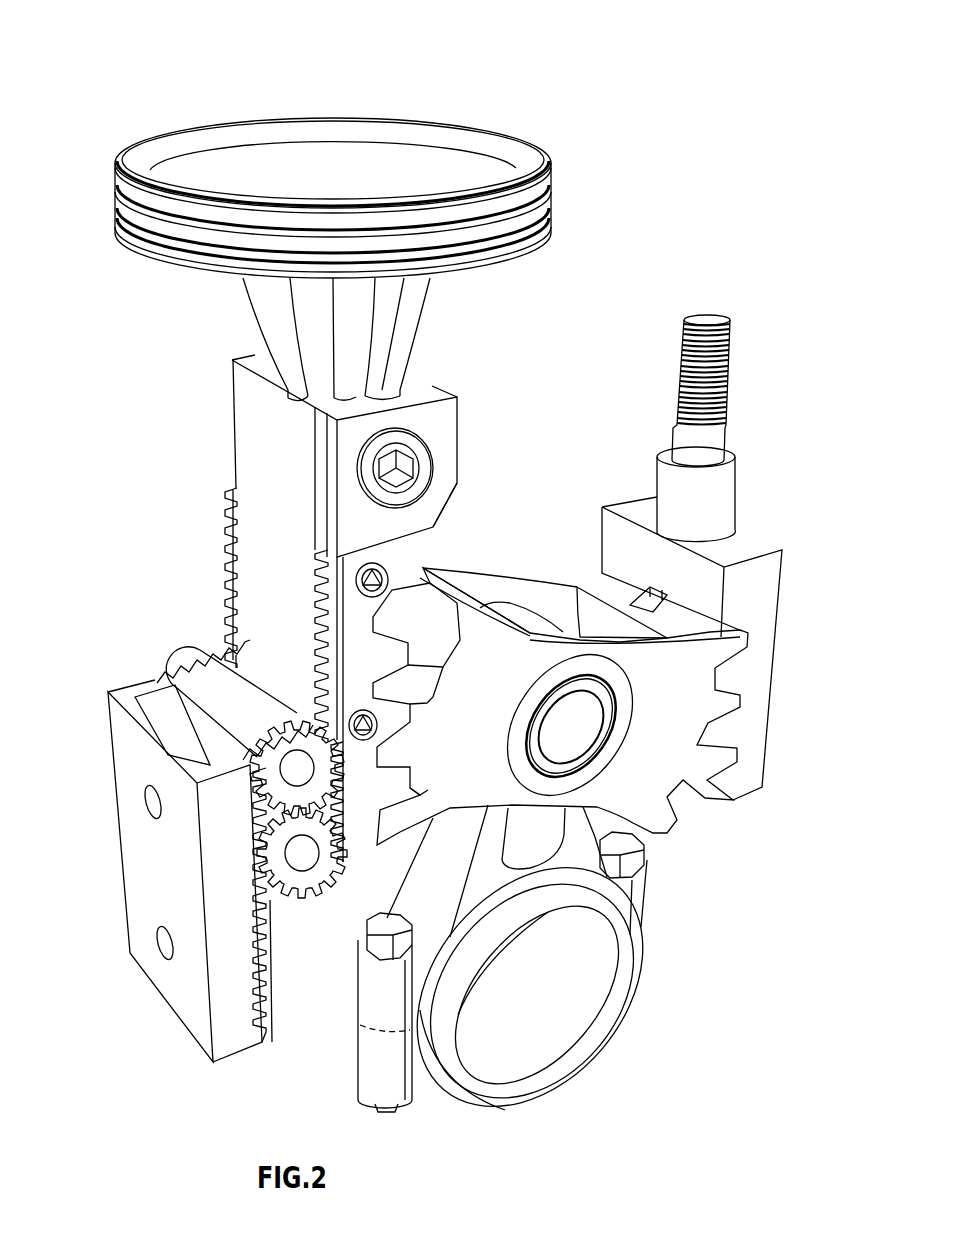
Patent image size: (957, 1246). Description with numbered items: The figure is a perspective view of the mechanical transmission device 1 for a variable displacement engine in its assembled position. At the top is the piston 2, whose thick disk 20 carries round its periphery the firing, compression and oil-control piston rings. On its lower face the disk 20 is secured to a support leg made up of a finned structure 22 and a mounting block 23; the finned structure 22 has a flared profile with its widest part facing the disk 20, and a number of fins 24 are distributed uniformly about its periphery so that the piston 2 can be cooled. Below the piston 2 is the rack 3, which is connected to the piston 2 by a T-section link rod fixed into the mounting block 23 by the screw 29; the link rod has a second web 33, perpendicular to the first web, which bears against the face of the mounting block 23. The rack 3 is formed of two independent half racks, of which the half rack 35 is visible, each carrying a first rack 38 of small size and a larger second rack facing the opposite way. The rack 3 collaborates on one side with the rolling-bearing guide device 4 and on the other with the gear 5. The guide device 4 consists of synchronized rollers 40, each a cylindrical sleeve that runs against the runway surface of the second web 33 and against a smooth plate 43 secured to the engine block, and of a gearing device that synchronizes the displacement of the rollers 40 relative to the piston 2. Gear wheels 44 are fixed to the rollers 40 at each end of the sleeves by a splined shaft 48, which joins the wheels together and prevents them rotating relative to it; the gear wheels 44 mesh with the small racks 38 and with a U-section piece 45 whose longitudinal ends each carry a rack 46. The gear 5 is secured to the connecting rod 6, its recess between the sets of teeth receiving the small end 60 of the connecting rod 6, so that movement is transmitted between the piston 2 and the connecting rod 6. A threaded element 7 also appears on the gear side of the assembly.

The mechanical transmission device 1 is at (712, 102).
The piston 2 is at (143, 108).
The rack 3 is at (200, 534).
The rolling-bearing guide device 4 is at (136, 616).
The gear 5 is at (572, 505).
The connecting rod 6 is at (642, 1036).
The threaded shaft 7 is at (750, 420).
The thick disk 20 is at (307, 163).
The finned structure 22 is at (226, 312).
The mounting block 23 is at (445, 418).
The fins 24 is at (397, 328).
The screw 29 is at (395, 468).
The second web 33 is at (262, 443).
The half rack 35 is at (412, 552).
The first rack 38 is at (228, 507).
The rollers 40 is at (222, 672).
The smooth plate 43 is at (170, 690).
The gear wheels 44 is at (295, 883).
The U-section piece 45 is at (148, 896).
The rack 46 is at (266, 1035).
The shaft 48 is at (305, 855).
The small end 60 is at (525, 617).